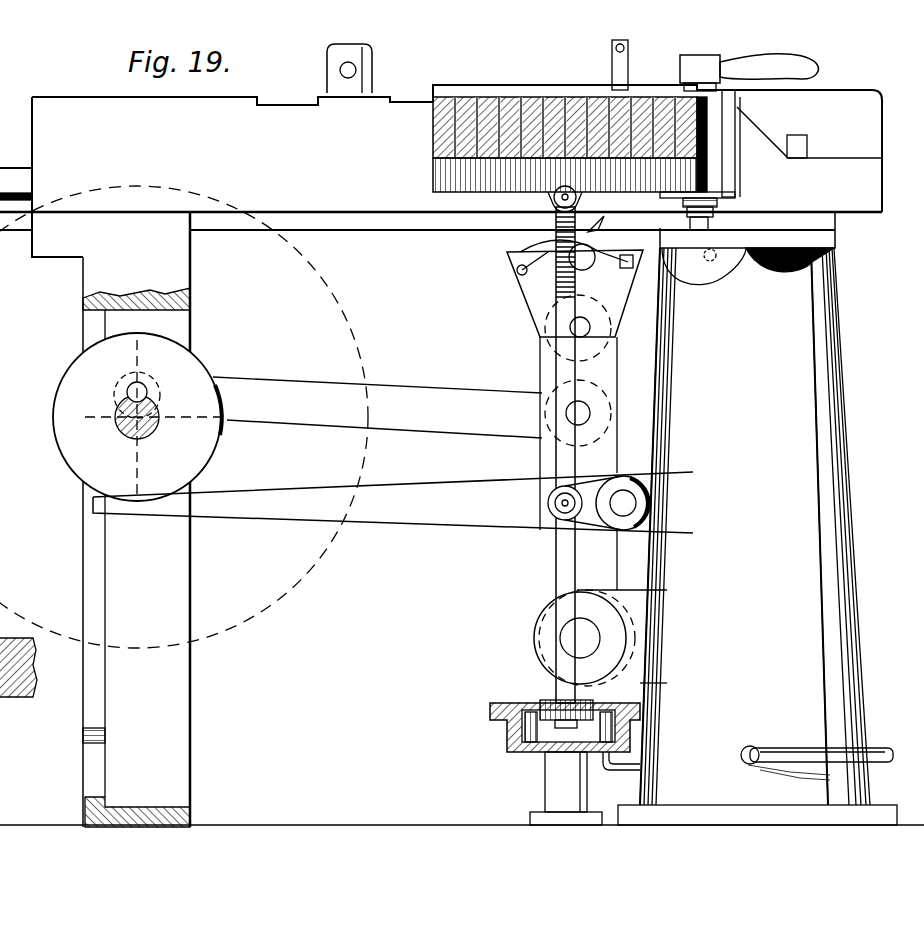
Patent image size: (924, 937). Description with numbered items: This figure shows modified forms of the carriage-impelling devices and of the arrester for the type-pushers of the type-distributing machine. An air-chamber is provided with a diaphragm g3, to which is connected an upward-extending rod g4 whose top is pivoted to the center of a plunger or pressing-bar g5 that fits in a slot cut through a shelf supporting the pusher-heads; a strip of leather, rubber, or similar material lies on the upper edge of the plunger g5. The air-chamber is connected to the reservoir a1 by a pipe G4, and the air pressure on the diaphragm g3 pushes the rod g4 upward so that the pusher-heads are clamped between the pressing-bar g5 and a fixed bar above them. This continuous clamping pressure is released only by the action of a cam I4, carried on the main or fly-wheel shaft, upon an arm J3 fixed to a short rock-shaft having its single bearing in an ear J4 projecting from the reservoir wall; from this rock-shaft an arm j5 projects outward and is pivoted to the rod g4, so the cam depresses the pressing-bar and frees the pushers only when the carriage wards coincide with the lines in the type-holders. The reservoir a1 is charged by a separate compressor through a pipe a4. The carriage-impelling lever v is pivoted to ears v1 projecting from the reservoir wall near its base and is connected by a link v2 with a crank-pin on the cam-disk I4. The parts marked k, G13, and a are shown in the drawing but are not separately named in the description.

The plunger or pressing-bar g5 is at (565, 144).
The upward-extending rod g4 is at (564, 455).
The diaphragm g3 is at (525, 712).
The roller k is at (586, 413).
The carriage-impelling lever v is at (622, 615).
The ears v1 is at (584, 638).
The link v2 is at (377, 407).
The cam I4 is at (139, 417).
The arm J3 is at (393, 502).
The ear J4 is at (617, 503).
The arm j5 is at (569, 504).
The bearing cup G13 is at (551, 764).
The pipe G4 is at (621, 773).
The column a is at (136, 519).
The reservoir a1 is at (807, 526).
The pipe a4 is at (817, 763).